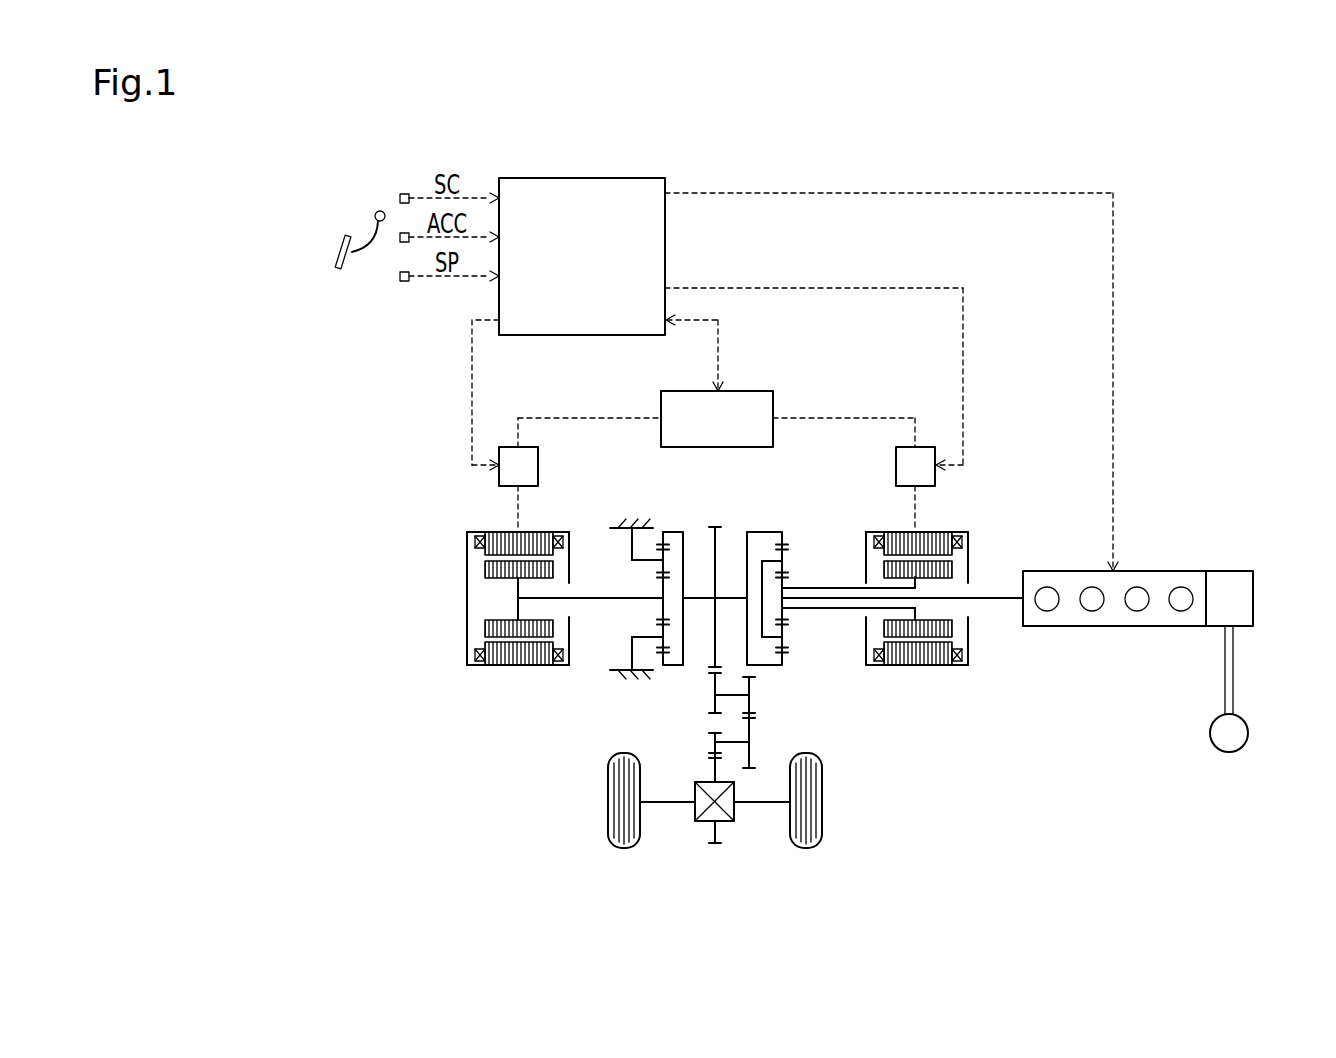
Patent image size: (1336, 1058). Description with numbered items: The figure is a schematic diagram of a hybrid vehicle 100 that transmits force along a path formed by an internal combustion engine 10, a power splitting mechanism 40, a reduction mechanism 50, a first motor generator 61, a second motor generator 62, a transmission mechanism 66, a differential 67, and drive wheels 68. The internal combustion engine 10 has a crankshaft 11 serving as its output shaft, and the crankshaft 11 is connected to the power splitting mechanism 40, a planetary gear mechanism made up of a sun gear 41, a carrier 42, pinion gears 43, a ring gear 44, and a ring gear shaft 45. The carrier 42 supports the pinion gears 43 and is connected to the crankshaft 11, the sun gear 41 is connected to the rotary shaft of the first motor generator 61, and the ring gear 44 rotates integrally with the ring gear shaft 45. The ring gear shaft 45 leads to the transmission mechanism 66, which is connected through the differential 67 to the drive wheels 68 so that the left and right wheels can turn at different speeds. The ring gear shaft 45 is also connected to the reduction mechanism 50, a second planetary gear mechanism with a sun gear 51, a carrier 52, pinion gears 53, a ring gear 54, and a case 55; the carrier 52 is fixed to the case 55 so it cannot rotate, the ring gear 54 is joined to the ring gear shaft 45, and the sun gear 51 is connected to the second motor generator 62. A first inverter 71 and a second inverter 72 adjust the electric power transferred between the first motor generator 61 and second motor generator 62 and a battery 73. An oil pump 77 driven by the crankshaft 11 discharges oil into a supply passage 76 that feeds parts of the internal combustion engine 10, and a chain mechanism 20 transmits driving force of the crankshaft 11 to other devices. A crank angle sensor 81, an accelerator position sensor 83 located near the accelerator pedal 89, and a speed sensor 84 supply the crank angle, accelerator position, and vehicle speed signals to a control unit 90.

The vehicle 100 is at (1025, 175).
The electronic control unit 90 is at (652, 178).
The crank angle sensor 81 is at (404, 193).
The accelerator position sensor 83 is at (400, 240).
The speed sensor 84 is at (404, 282).
The accelerator pedal 89 is at (336, 262).
The battery 73 is at (745, 391).
The second inverter 72 is at (508, 447).
The first inverter 71 is at (925, 447).
The second motor generator 62 is at (466, 600).
The first motor generator 61 is at (950, 531).
The reduction mechanism 50 is at (630, 497).
The ring gear 54 is at (652, 527).
The sun gear 51 is at (660, 584).
The carrier 52 is at (660, 628).
The case 55 is at (622, 668).
The pinion gears 53 is at (659, 652).
The ring gear shaft 45 is at (717, 595).
The power splitting mechanism 40 is at (782, 520).
The ring gear 44 is at (787, 546).
The sun gear 41 is at (787, 578).
The pinion gears 43 is at (787, 624).
The carrier 42 is at (768, 640).
The crankshaft 11 is at (997, 600).
The internal combustion engine 10 is at (1108, 626).
The chain mechanism 20 is at (1253, 592).
The supply passage 76 is at (1233, 665).
The oil pump 77 is at (1248, 733).
The transmission mechanism 66 is at (770, 719).
The differential 67 is at (704, 823).
The drive wheels 68 is at (606, 813).